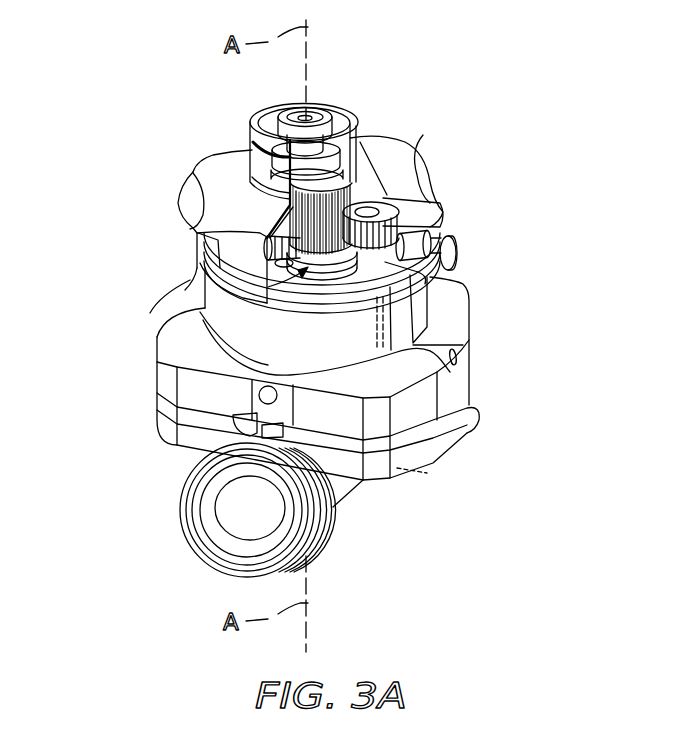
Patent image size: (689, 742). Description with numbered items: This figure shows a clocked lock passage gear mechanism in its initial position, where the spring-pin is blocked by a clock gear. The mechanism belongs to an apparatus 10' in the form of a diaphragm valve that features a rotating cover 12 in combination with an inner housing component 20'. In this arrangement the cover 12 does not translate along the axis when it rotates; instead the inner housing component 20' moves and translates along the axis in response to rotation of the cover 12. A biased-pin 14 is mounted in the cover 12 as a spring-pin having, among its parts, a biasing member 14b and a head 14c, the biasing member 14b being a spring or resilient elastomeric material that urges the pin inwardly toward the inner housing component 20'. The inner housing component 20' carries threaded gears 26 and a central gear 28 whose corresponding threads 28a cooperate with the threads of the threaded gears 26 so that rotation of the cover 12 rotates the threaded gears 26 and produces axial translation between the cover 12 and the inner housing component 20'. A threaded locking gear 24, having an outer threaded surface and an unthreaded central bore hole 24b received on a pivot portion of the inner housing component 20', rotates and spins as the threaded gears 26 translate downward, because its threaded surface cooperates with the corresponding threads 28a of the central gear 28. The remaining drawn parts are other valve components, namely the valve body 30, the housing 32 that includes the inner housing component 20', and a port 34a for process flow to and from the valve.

The apparatus 10' is at (90, 39).
The cover 12 is at (192, 172).
The biased-pin 14 is at (466, 162).
The biasing member 14b is at (437, 243).
The head 14c is at (458, 252).
The inner housing component 20' is at (295, 319).
The threaded locking gear 24 is at (428, 272).
The unthreaded central bore hole 24b is at (412, 192).
The threaded gears 26 is at (267, 249).
The central gear 28 is at (357, 196).
The corresponding threads 28a is at (268, 190).
The valve body 30 is at (393, 480).
The housing 32 is at (345, 430).
The port 34a is at (180, 506).